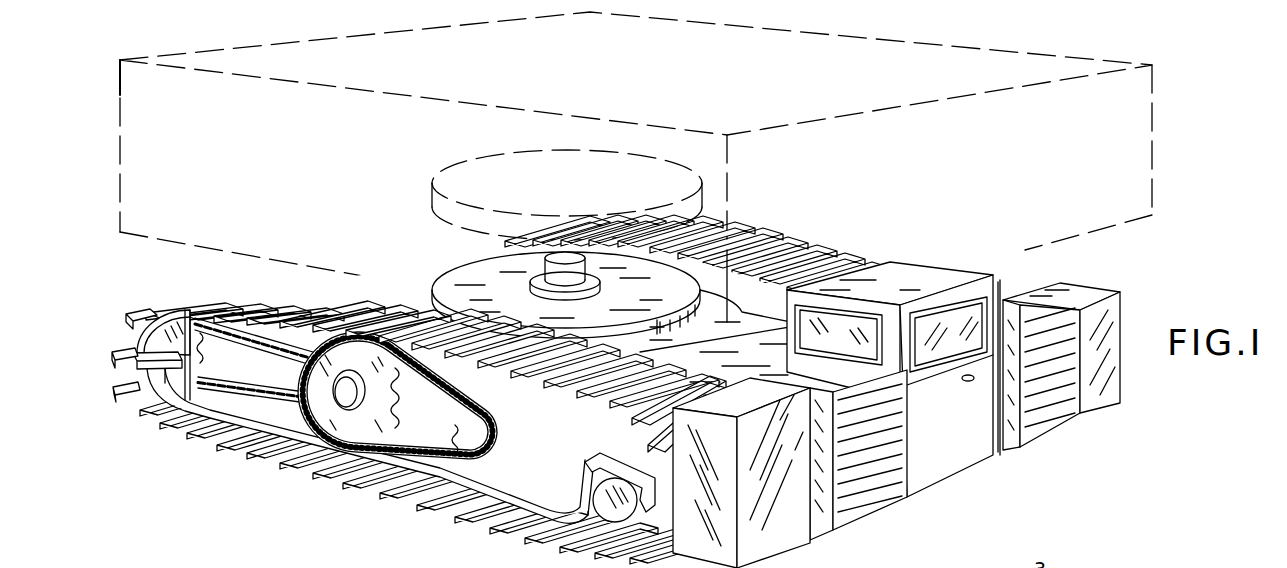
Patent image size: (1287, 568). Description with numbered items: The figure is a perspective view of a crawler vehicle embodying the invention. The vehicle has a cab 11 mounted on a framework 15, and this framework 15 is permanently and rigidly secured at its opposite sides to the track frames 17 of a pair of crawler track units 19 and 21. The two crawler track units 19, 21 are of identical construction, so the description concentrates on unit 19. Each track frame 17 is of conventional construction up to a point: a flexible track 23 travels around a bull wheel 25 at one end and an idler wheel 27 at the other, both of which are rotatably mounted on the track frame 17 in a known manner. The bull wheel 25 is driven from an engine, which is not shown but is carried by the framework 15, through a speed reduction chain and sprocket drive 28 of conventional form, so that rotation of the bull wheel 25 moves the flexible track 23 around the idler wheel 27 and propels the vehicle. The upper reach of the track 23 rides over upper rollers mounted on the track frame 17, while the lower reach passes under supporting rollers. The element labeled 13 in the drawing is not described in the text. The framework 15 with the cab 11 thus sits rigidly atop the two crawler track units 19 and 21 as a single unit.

The cab 11 is at (954, 276).
The turntable 13 is at (468, 262).
The framework 15 is at (690, 306).
The track frame 17 is at (493, 468).
The crawler track unit 19 is at (286, 288).
The crawler track unit 21 is at (789, 236).
The flexible track 23 is at (362, 490).
The bull wheel 25 is at (140, 393).
The idler wheel 27 is at (590, 500).
The speed reduction chain and sprocket drive 28 is at (498, 409).